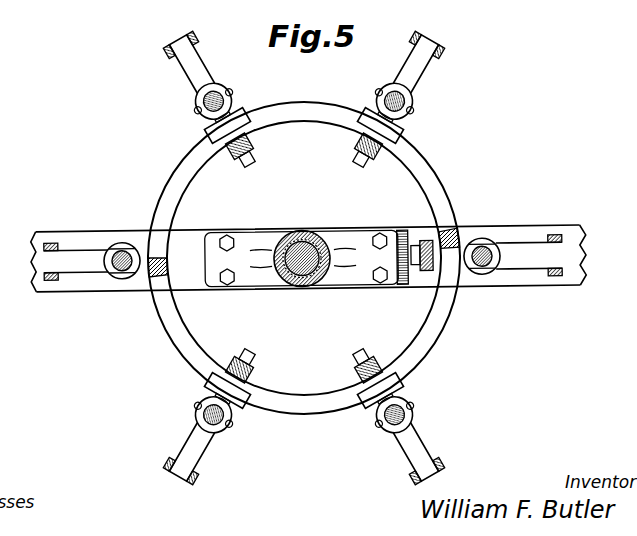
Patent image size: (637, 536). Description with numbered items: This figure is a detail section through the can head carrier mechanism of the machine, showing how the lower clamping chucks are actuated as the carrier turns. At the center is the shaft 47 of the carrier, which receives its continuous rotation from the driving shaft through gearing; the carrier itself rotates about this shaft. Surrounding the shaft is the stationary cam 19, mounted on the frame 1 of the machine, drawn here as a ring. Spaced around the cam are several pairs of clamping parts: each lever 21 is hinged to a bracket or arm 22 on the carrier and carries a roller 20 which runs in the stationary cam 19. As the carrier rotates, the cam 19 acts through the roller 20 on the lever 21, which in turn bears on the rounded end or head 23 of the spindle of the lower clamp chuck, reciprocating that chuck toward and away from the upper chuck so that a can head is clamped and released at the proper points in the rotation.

The frame 1 is at (527, 229).
The stationary cam 19 is at (170, 322).
The roller 20 is at (400, 136).
The lever 21 is at (414, 72).
The bracket or arm 22 is at (418, 28).
The rounded end or head 23 is at (208, 97).
The shaft 47 is at (303, 252).